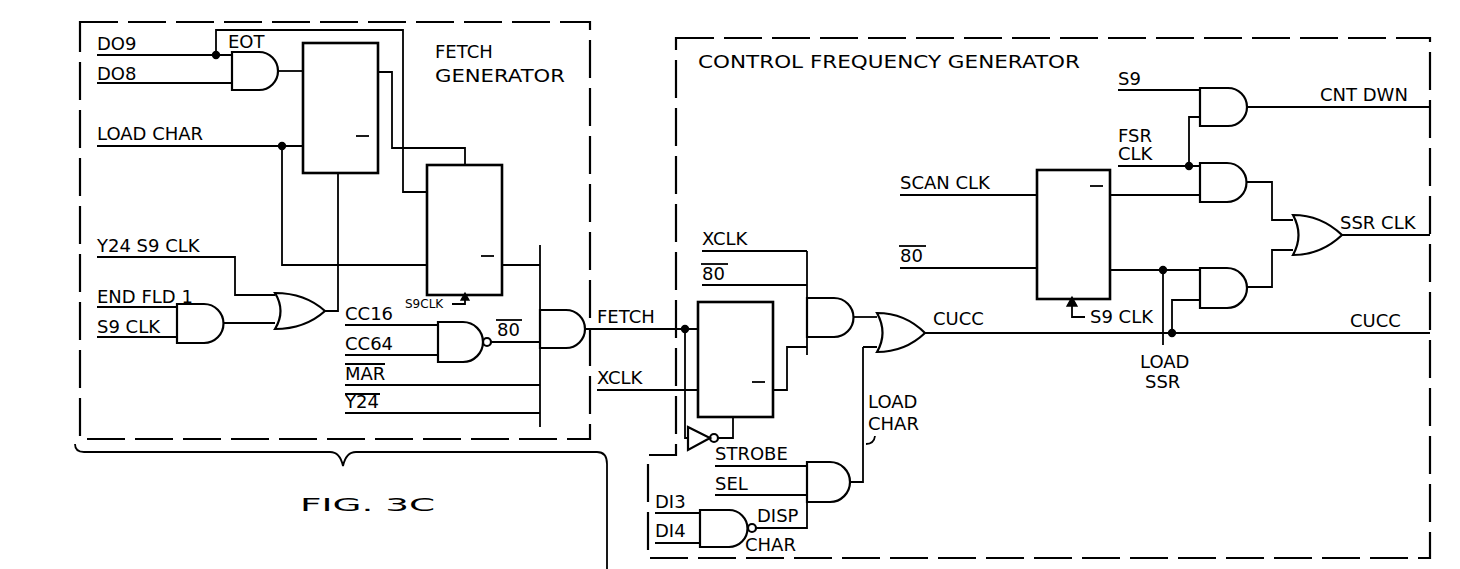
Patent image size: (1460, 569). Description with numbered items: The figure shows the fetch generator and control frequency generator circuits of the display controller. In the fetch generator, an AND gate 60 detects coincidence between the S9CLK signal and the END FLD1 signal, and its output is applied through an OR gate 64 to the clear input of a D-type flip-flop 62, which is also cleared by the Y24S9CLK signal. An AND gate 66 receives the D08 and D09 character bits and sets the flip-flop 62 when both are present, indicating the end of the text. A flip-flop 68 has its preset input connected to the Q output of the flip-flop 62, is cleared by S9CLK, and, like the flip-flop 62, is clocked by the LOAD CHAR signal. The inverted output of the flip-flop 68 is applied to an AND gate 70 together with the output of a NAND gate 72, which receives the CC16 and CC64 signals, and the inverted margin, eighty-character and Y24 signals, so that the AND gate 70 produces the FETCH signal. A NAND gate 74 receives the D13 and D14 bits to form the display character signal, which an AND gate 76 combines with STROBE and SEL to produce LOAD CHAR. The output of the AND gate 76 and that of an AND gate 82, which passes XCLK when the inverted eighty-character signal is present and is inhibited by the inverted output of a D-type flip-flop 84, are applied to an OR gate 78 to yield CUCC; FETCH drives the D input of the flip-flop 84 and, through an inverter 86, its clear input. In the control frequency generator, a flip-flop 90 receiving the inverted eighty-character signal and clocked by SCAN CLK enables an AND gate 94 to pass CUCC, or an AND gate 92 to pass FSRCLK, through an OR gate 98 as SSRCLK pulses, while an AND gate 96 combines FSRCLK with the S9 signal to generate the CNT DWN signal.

The AND gate 60 is at (200, 323).
The D-type flip-flop 62 is at (340, 108).
The OR gate 64 is at (300, 311).
The AND gate 66 is at (267, 71).
The flip-flop 68 is at (464, 230).
The AND gate 70 is at (562, 329).
The NAND gate 72 is at (464, 342).
The NAND gate 74 is at (728, 528).
The AND gate 76 is at (828, 482).
The OR gate 78 is at (901, 332).
The AND gate 82 is at (830, 317).
The D-type flip-flop 84 is at (735, 359).
The inverter 86 is at (697, 451).
The flip-flop 90 is at (1073, 234).
The AND gate 92 is at (1223, 182).
The AND gate 94 is at (1223, 288).
The AND gate 96 is at (1223, 107).
The OR gate 98 is at (1317, 235).